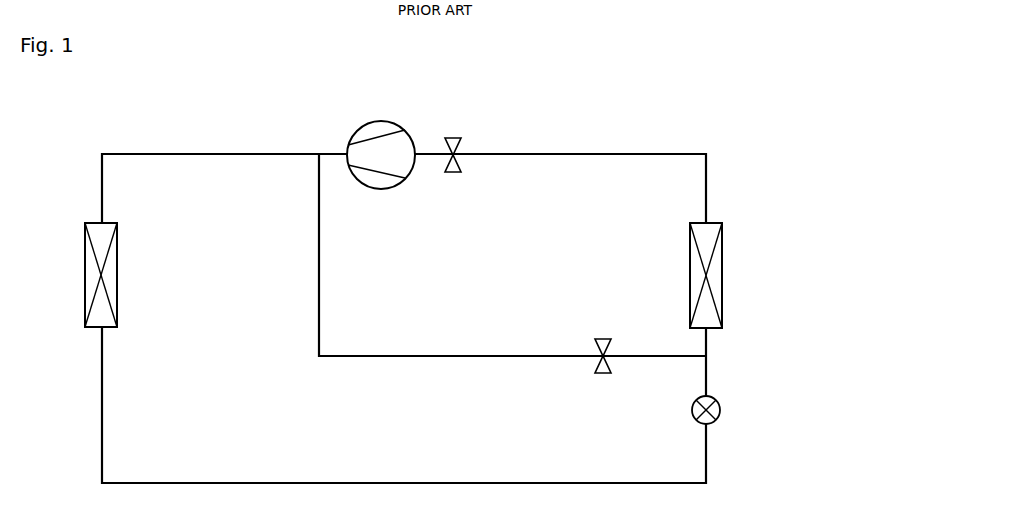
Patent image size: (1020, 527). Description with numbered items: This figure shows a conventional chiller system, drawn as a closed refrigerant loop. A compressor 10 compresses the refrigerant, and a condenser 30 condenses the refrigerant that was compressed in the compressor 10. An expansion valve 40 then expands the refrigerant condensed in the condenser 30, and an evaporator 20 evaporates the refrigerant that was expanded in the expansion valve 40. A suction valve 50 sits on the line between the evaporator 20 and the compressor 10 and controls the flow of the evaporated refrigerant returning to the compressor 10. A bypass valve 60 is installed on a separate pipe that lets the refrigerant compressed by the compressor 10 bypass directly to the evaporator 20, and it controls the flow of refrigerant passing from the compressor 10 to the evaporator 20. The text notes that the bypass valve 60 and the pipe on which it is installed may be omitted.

The compressor 10 is at (381, 120).
The evaporator 20 is at (686, 275).
The condenser 30 is at (121, 275).
The expansion valve 40 is at (720, 410).
The suction valve 50 is at (453, 138).
The bypass valve 60 is at (603, 339).